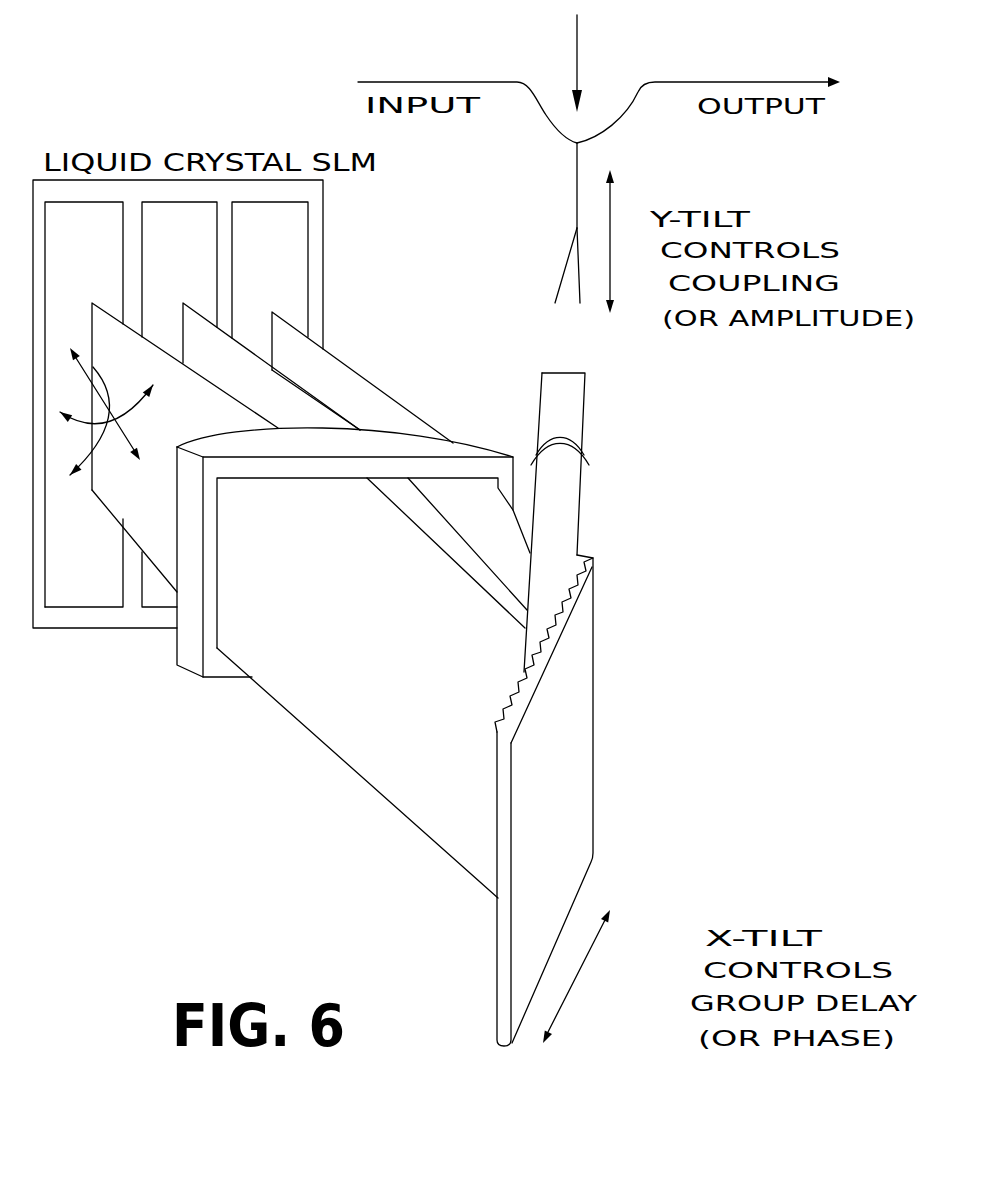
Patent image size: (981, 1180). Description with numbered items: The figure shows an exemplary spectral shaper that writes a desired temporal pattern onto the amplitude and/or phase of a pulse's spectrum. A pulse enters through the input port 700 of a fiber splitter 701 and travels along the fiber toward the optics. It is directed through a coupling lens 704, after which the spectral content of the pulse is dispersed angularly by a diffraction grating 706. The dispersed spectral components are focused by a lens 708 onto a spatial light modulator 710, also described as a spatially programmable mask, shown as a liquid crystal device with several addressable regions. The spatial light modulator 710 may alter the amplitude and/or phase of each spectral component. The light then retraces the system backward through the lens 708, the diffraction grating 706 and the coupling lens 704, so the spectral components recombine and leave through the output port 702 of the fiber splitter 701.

The input port 700 is at (425, 82).
The fiber splitter 701 is at (580, 52).
The output port 702 is at (732, 82).
The coupling lens 704 is at (598, 433).
The diffraction grating 706 is at (593, 743).
The lens 708 is at (487, 453).
The spatial light modulator 710 is at (114, 630).